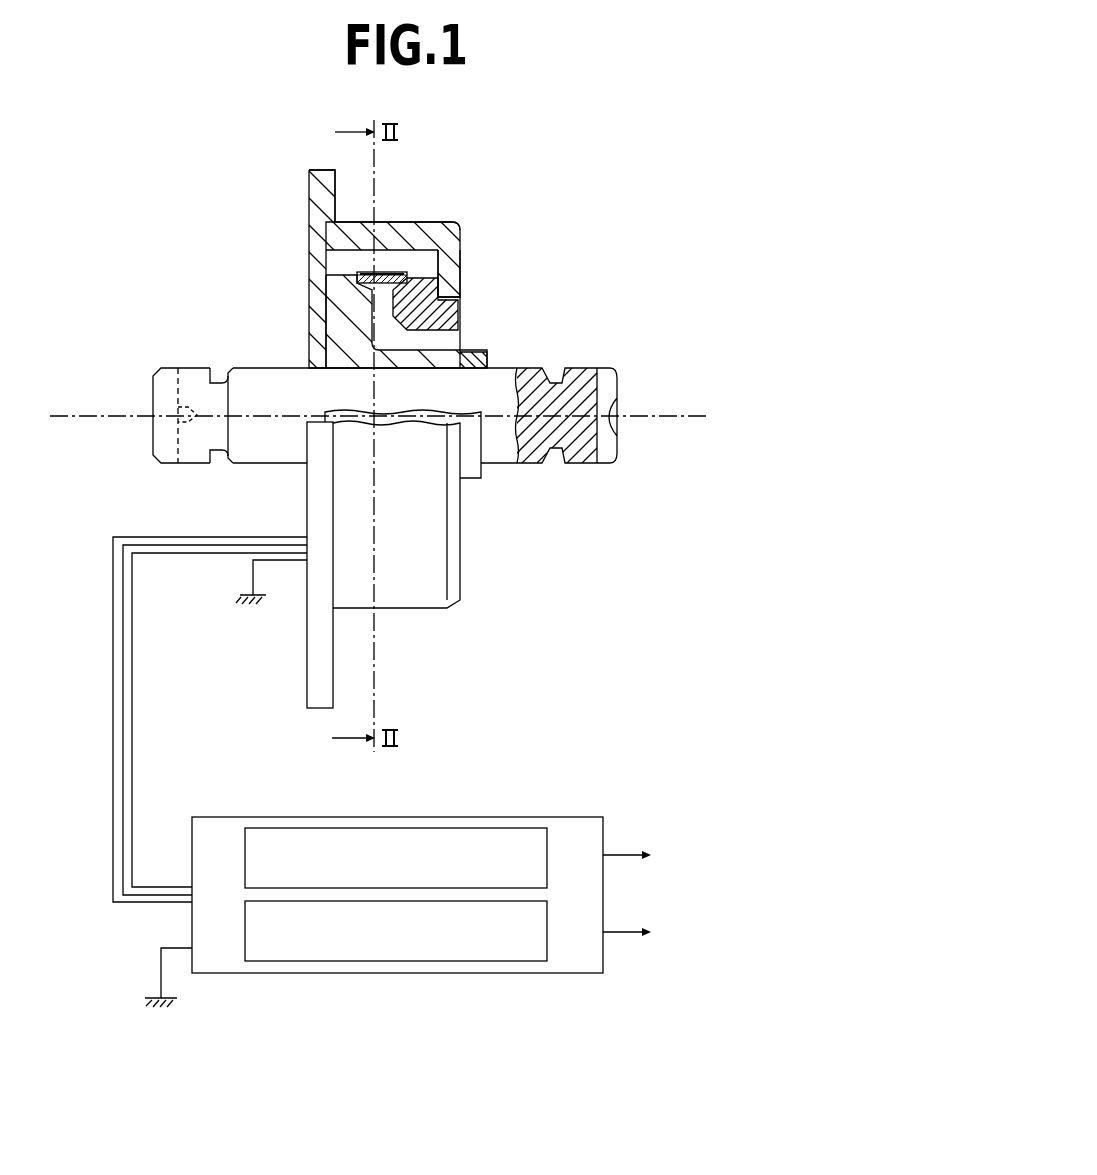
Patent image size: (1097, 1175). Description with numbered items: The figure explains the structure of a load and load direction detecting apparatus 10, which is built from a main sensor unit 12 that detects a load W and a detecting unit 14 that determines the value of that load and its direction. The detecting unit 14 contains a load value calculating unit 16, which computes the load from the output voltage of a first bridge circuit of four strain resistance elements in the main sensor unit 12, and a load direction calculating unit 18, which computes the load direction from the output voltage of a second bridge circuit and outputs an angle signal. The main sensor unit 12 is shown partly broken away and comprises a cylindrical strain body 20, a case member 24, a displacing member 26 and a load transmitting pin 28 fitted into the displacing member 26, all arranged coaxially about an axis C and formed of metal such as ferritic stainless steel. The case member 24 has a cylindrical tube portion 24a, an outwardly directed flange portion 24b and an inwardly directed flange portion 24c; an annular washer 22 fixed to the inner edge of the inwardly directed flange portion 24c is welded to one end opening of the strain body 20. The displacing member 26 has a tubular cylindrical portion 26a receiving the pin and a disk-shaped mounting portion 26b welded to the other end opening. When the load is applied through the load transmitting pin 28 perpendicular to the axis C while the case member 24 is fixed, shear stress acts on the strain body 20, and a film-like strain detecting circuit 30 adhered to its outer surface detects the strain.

The load and load direction detecting apparatus 10 is at (726, 262).
The main sensor unit 12 is at (393, 271).
The detecting unit 14 is at (565, 884).
The load value calculating unit 16 is at (527, 835).
The load direction calculating unit 18 is at (530, 950).
The strain body 20 is at (357, 276).
The washer 22 is at (454, 316).
The case member 24 is at (392, 436).
The cylindrical tube portion 24a is at (408, 228).
The outwardly directed flange portion 24b is at (318, 185).
The inwardly directed flange portion 24c is at (452, 277).
The displacing member 26 is at (406, 391).
The tubular cylindrical portion 26a is at (463, 358).
The mounting portion 26b is at (337, 321).
The load transmitting pin 28 is at (246, 372).
The strain detecting circuit 30 is at (372, 273).
The axis C is at (690, 416).